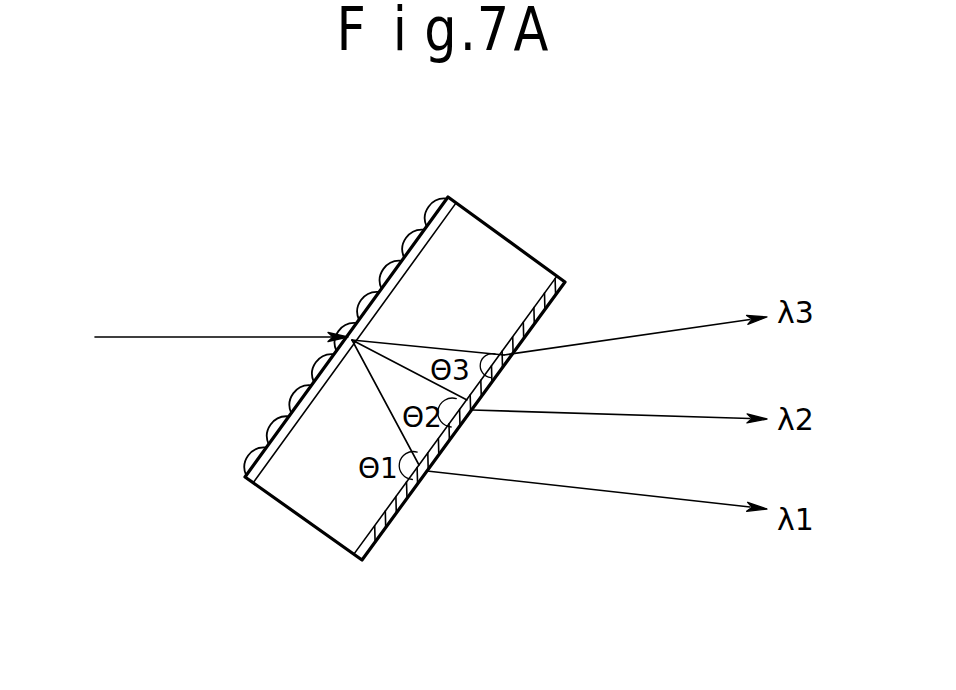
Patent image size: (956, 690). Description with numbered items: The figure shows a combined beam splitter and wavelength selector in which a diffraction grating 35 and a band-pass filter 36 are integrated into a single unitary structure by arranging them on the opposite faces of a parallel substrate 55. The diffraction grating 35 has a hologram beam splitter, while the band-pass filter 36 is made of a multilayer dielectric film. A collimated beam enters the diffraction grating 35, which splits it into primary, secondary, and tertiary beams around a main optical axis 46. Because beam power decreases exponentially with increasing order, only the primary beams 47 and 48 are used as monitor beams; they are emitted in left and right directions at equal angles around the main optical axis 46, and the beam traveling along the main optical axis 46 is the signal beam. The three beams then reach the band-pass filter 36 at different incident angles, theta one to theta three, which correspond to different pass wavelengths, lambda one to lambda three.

The diffraction grating 35 is at (431, 203).
The band-pass filter 36 is at (552, 305).
The main optical axis 46 is at (247, 337).
The primary beam 47 is at (373, 380).
The primary beam 48 is at (458, 351).
The parallel substrate 55 is at (518, 243).